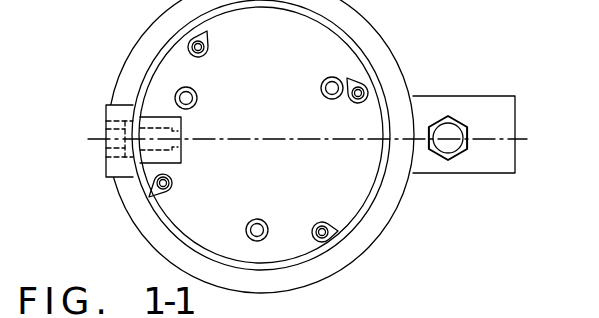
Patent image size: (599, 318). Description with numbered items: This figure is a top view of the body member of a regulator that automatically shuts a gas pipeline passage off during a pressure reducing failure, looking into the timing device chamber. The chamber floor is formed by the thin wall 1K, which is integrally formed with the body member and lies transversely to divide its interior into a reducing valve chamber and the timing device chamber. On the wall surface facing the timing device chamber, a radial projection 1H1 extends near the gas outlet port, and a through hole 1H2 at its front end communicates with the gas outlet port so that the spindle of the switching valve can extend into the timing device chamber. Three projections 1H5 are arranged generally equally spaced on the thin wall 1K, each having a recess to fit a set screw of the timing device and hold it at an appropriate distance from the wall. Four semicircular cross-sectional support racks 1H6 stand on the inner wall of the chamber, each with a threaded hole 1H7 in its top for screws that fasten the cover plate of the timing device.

The thin wall 1K is at (350, 180).
The radial projection 1H1 is at (166, 115).
The through hole 1H2 is at (180, 128).
The threaded hole 1H7 is at (190, 43).
The semicircular cross-sectional support rack 1H6 is at (212, 47).
The projection 1H5 is at (348, 79).